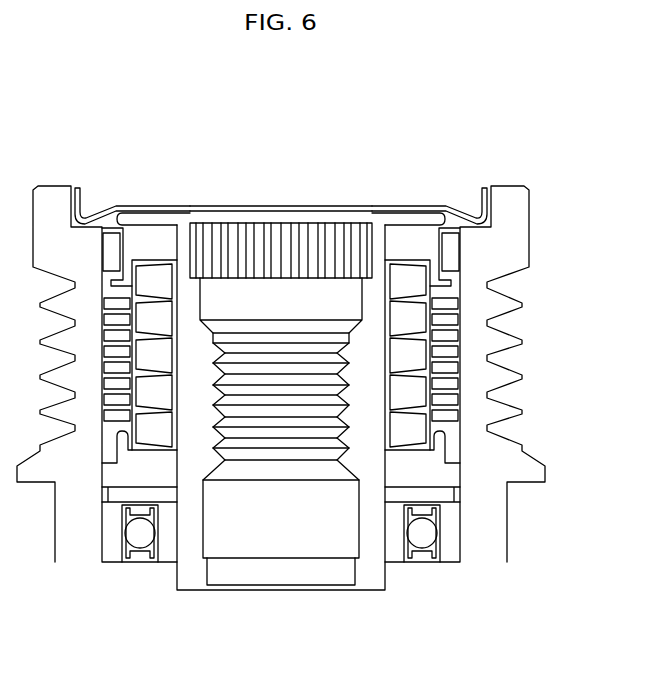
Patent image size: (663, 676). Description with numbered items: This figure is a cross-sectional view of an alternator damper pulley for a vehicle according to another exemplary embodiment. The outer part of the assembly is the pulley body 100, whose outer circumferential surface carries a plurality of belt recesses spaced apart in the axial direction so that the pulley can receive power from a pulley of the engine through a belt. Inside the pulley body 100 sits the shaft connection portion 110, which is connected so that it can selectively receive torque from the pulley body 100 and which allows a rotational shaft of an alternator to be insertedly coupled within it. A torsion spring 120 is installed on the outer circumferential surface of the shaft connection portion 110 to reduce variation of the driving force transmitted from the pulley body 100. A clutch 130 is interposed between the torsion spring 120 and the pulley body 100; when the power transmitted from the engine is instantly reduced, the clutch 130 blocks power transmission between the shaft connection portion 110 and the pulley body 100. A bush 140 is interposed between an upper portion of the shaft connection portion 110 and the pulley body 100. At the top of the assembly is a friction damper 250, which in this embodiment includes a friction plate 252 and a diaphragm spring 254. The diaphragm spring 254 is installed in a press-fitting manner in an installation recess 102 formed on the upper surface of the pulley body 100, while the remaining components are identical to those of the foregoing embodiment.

The pulley body 100 is at (497, 527).
The installation recess 102 is at (83, 207).
The shaft connection portion 110 is at (188, 583).
The torsion spring 120 is at (398, 475).
The clutch 130 is at (452, 305).
The bush 140 is at (453, 253).
The friction damper 250 is at (477, 126).
The friction plate 252 is at (412, 220).
The diaphragm spring 254 is at (480, 200).